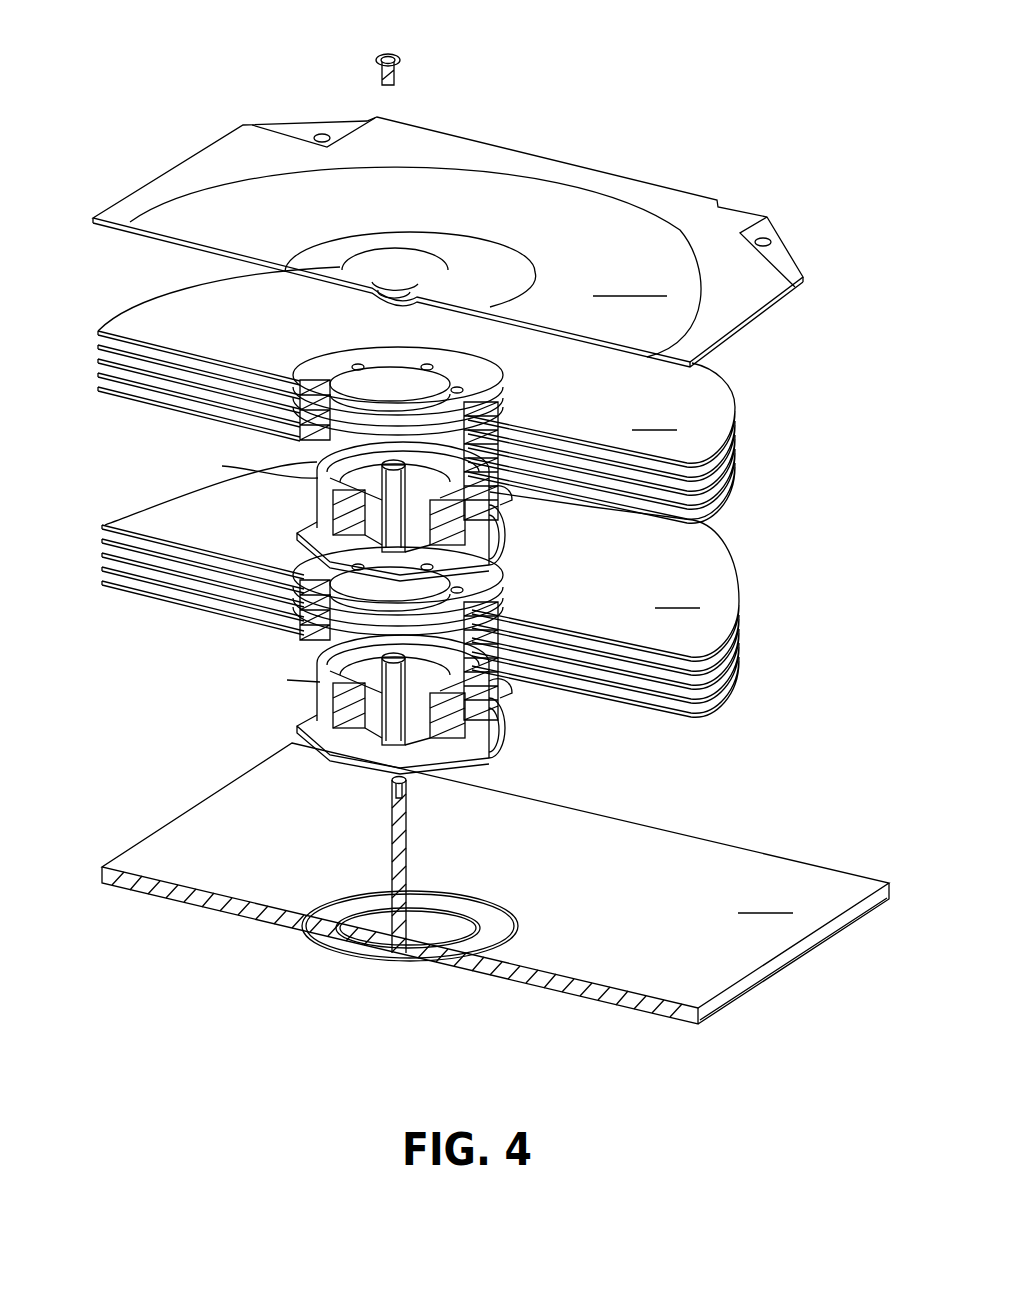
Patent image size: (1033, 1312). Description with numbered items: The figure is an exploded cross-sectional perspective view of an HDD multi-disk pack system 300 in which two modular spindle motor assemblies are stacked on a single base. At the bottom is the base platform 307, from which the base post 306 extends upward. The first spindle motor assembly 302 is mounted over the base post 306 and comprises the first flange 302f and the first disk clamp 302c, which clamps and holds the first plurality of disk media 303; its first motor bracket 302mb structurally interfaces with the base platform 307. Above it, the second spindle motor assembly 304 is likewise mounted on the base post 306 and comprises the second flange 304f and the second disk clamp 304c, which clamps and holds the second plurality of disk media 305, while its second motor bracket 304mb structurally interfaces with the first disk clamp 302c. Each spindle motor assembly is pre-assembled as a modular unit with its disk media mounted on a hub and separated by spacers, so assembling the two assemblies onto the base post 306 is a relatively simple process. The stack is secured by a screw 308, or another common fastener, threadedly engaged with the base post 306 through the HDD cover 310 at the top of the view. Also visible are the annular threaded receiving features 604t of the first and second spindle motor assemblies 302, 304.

The multi-disk pack system 300 is at (133, 84).
The screw 308 is at (390, 55).
The HDD cover 310 is at (685, 208).
The second spindle motor assembly 304 is at (416, 497).
The second plurality of disk media 305 is at (745, 392).
The second disk clamp 304c is at (472, 393).
The second motor bracket 304mb is at (313, 542).
The second flange 304f is at (500, 533).
The annular threaded receiving features 604t is at (490, 497).
The first spindle motor assembly 302 is at (418, 628).
The first plurality of disk media 303 is at (745, 603).
The first disk clamp 302c is at (487, 583).
The first motor bracket 302mb is at (445, 755).
The first flange 302f is at (503, 727).
The base post 306 is at (408, 948).
The base platform 307 is at (676, 1013).